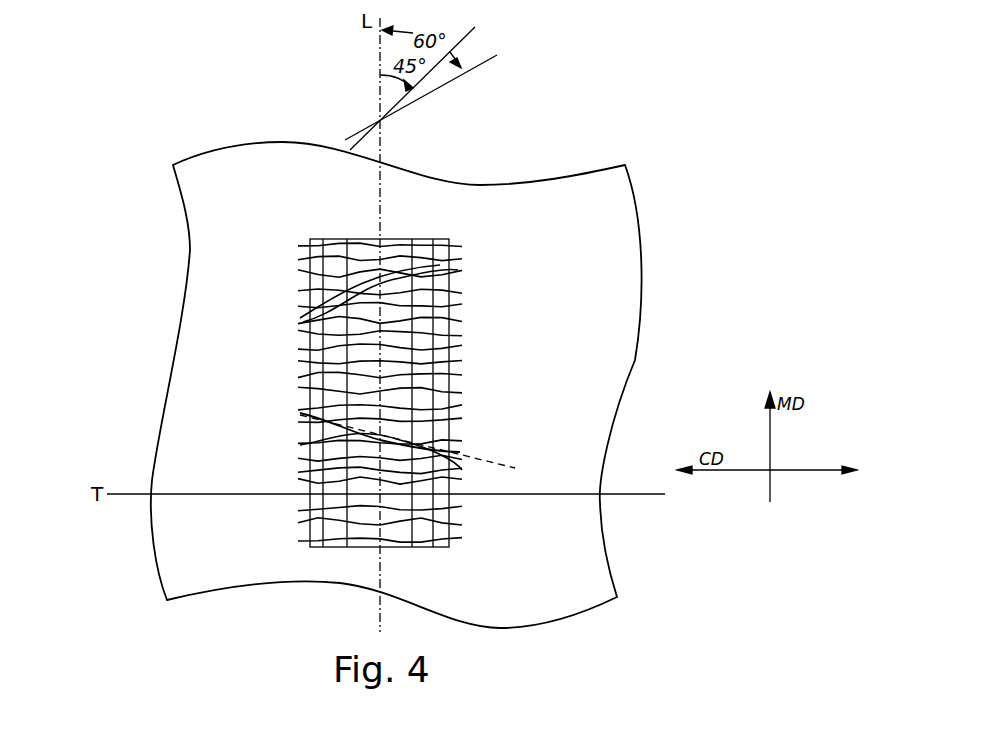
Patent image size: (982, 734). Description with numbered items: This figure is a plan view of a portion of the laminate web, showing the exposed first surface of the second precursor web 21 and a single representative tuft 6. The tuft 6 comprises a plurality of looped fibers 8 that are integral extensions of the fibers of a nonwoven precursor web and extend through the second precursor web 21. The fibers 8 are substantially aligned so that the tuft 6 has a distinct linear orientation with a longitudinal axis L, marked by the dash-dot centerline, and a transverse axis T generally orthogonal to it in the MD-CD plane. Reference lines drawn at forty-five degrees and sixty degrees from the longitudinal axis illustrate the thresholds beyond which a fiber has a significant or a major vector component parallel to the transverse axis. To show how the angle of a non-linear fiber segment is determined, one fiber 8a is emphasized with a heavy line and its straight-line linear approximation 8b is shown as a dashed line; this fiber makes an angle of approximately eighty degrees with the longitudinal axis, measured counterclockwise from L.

The second precursor web 21 is at (232, 256).
The tuft 6 is at (478, 318).
The looped fibers 8 is at (397, 333).
The fiber 8a is at (300, 413).
The linear approximation 8b is at (300, 415).